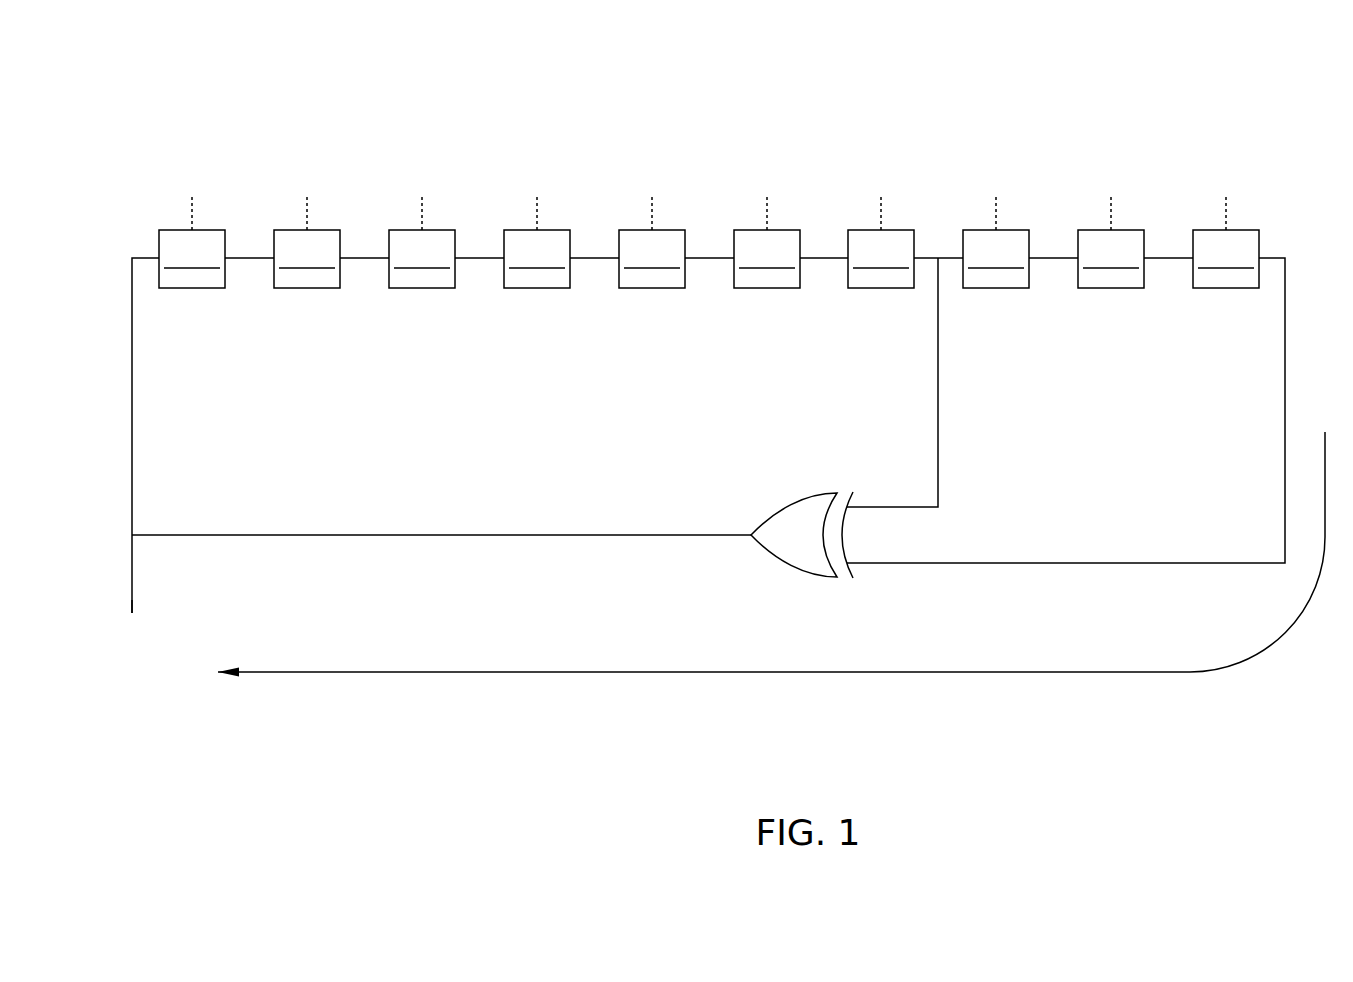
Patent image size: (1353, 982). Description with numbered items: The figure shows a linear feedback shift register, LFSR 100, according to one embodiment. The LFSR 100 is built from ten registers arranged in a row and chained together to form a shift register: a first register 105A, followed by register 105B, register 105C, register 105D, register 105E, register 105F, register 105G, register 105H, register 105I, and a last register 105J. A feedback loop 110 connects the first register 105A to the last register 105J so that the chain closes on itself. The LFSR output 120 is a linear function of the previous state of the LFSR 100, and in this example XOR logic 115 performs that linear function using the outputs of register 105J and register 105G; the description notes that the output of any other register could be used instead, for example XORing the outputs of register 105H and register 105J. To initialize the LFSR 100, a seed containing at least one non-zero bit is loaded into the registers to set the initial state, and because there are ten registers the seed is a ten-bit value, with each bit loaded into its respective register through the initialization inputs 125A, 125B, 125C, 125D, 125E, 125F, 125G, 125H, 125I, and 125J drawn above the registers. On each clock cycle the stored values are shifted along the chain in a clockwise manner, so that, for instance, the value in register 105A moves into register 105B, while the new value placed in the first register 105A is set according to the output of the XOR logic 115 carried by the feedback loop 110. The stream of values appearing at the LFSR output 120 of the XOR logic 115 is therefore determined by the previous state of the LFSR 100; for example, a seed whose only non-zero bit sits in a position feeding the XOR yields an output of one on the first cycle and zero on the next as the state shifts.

The LFSR 100 is at (708, 318).
The first register 105A is at (192, 259).
The register 105B is at (307, 259).
The register 105C is at (422, 259).
The register 105D is at (537, 259).
The register 105E is at (652, 259).
The register 105F is at (767, 259).
The register 105G is at (881, 259).
The register 105H is at (996, 259).
The register 105I is at (1111, 259).
The last register 105J is at (1226, 259).
The feedback loop 110 is at (1089, 672).
The XOR logic 115 is at (803, 480).
The LFSR output 120 is at (140, 655).
The initialization input 125A is at (192, 183).
The initialization input 125B is at (307, 183).
The initialization input 125C is at (422, 183).
The initialization input 125D is at (537, 183).
The initialization input 125E is at (652, 183).
The initialization input 125F is at (767, 183).
The initialization input 125G is at (881, 183).
The initialization input 125H is at (996, 183).
The initialization input 125I is at (1111, 183).
The initialization input 125J is at (1226, 183).